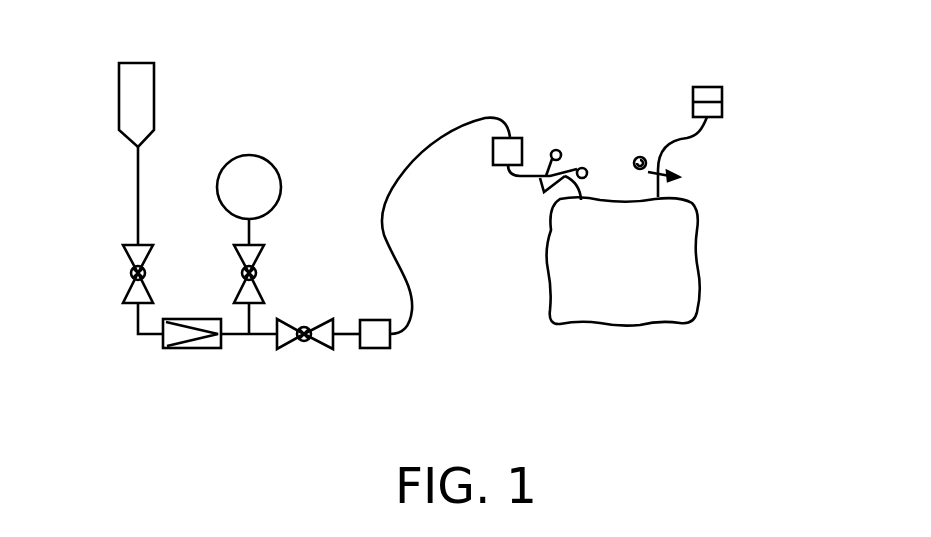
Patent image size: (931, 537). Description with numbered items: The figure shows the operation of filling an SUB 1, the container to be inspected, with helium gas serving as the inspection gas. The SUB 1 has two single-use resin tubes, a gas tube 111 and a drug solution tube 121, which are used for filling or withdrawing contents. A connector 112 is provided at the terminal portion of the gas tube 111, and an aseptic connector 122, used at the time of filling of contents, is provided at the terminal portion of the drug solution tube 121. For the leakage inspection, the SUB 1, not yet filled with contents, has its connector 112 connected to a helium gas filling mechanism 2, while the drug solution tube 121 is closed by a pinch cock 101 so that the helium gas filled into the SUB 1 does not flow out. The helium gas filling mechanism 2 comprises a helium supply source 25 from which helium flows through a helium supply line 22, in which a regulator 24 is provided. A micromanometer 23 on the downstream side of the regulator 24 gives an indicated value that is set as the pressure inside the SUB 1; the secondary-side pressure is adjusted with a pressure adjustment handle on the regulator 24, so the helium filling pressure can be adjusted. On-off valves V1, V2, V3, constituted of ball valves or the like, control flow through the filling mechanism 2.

The SUB 1 is at (698, 258).
The helium gas filling mechanism 2 is at (274, 60).
The helium supply line 22 is at (262, 337).
The micromanometer 23 is at (247, 156).
The regulator 24 is at (193, 352).
The helium supply source 25 is at (118, 97).
The on-off valve V1 is at (295, 327).
The on-off valve V2 is at (262, 258).
The on-off valve V3 is at (126, 265).
The pinch cock 101 is at (638, 157).
The gas tube 111 is at (516, 179).
The connector 112 is at (510, 136).
The drug solution tube 121 is at (703, 157).
The aseptic connector 122 is at (723, 102).